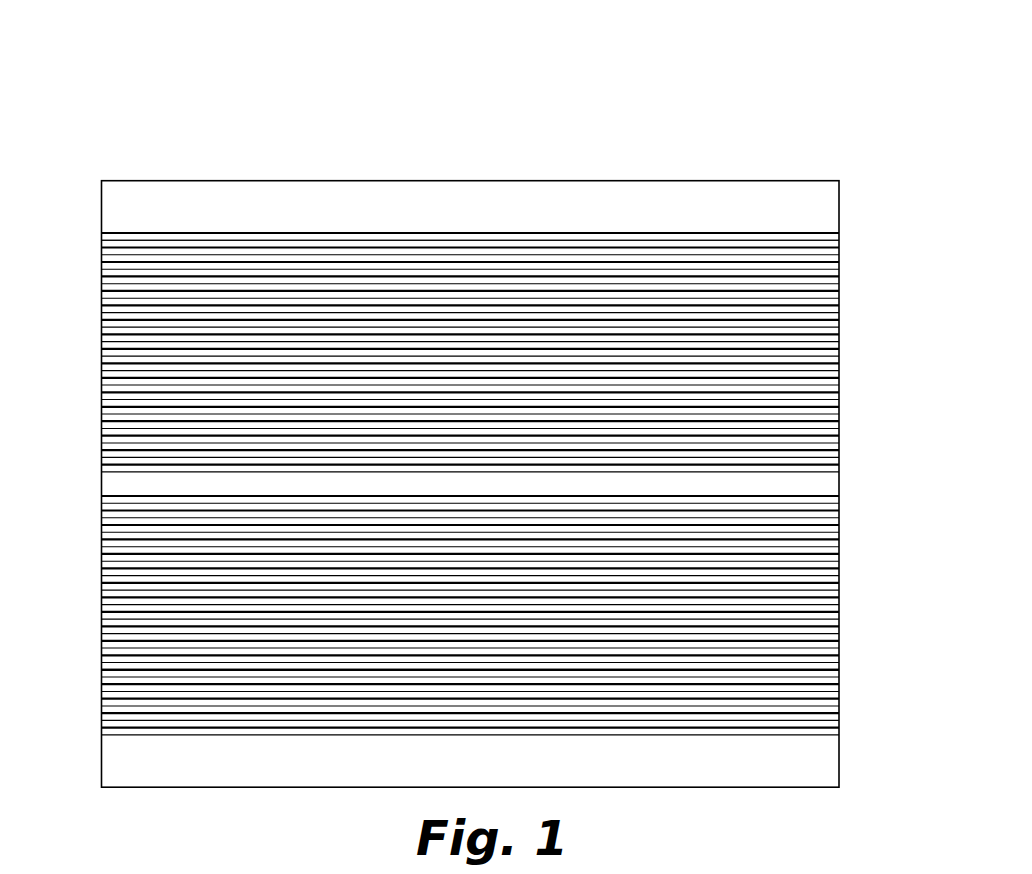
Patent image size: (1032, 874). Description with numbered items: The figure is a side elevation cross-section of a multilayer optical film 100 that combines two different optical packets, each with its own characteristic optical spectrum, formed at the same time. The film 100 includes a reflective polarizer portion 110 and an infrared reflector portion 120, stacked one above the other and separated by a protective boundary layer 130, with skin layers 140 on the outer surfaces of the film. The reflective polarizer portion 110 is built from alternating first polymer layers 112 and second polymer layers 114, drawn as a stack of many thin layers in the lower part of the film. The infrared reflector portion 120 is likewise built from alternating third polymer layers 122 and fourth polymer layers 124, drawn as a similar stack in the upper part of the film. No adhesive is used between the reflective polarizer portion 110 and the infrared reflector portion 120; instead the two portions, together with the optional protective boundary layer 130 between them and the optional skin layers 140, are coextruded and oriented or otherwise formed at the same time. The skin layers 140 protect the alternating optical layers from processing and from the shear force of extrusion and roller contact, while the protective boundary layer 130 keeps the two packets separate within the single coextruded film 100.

The optical film 100 is at (786, 64).
The reflective polarizer portion 110 is at (85, 488).
The first polymer layers 112 is at (818, 663).
The second polymer layers 114 is at (818, 656).
The infrared reflector portion 120 is at (85, 225).
The third polymer layers 122 is at (818, 230).
The fourth polymer layers 124 is at (818, 236).
The protective boundary layer 130 is at (822, 474).
The skin layers 140 is at (705, 186).